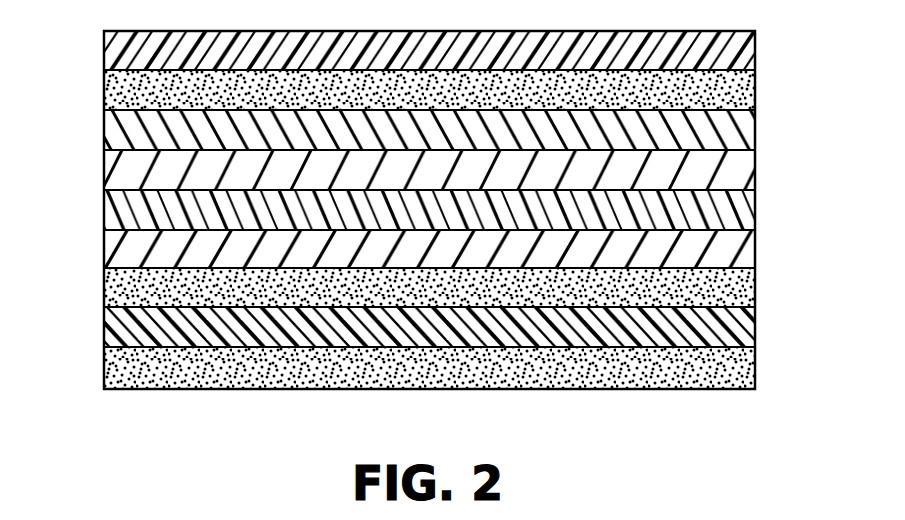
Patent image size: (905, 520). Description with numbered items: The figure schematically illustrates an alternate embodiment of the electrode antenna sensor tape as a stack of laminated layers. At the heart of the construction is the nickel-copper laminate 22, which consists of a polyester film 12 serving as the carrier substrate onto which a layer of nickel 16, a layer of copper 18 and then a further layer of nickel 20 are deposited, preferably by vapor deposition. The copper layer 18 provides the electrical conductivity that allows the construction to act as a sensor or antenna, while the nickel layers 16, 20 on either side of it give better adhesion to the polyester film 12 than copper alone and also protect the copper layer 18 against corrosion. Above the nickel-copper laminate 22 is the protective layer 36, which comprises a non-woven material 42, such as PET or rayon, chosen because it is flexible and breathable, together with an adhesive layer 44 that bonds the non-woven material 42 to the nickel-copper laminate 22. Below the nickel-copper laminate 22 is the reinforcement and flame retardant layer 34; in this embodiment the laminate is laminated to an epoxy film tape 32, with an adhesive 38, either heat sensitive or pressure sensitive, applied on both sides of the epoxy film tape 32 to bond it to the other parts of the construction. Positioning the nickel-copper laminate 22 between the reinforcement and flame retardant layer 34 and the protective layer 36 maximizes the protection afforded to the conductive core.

The polyester film 12 is at (104, 249).
The nickel layer 16 is at (104, 210).
The copper layer 18 is at (104, 169).
The nickel layer 20 is at (104, 129).
The nickel-copper laminate 22 is at (434, 183).
The epoxy film tape 32 is at (104, 329).
The reinforcement and flame retardant layer 34 is at (434, 323).
The protective layer 36 is at (434, 66).
The adhesive 38 is at (104, 287).
The non-woven material 42 is at (104, 53).
The adhesive layer 44 is at (104, 93).